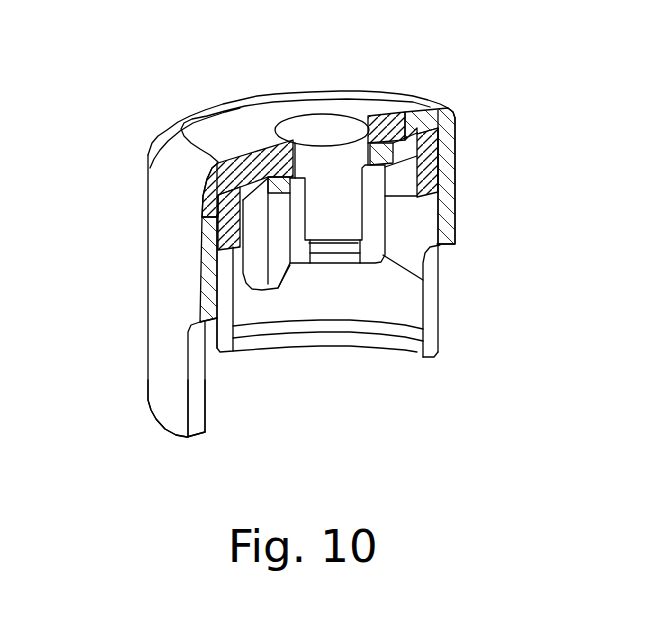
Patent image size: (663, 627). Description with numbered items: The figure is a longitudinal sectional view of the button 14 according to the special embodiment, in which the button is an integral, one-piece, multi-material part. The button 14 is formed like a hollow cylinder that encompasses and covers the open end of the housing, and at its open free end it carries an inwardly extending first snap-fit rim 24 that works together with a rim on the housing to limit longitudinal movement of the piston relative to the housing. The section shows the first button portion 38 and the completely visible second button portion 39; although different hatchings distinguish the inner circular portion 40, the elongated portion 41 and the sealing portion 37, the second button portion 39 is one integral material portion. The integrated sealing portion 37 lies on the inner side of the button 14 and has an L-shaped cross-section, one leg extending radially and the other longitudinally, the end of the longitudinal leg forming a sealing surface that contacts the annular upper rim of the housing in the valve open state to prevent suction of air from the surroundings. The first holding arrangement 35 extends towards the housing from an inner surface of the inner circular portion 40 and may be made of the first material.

The button 14 is at (150, 446).
The first snap-fit rim 24 is at (328, 342).
The first holding arrangement 35 is at (261, 320).
The integrated sealing portion 37 is at (306, 189).
The first button portion 38 is at (350, 259).
The second button portion 39 is at (305, 92).
The inner circular portion 40 is at (350, 143).
The elongated portion 41 is at (162, 139).